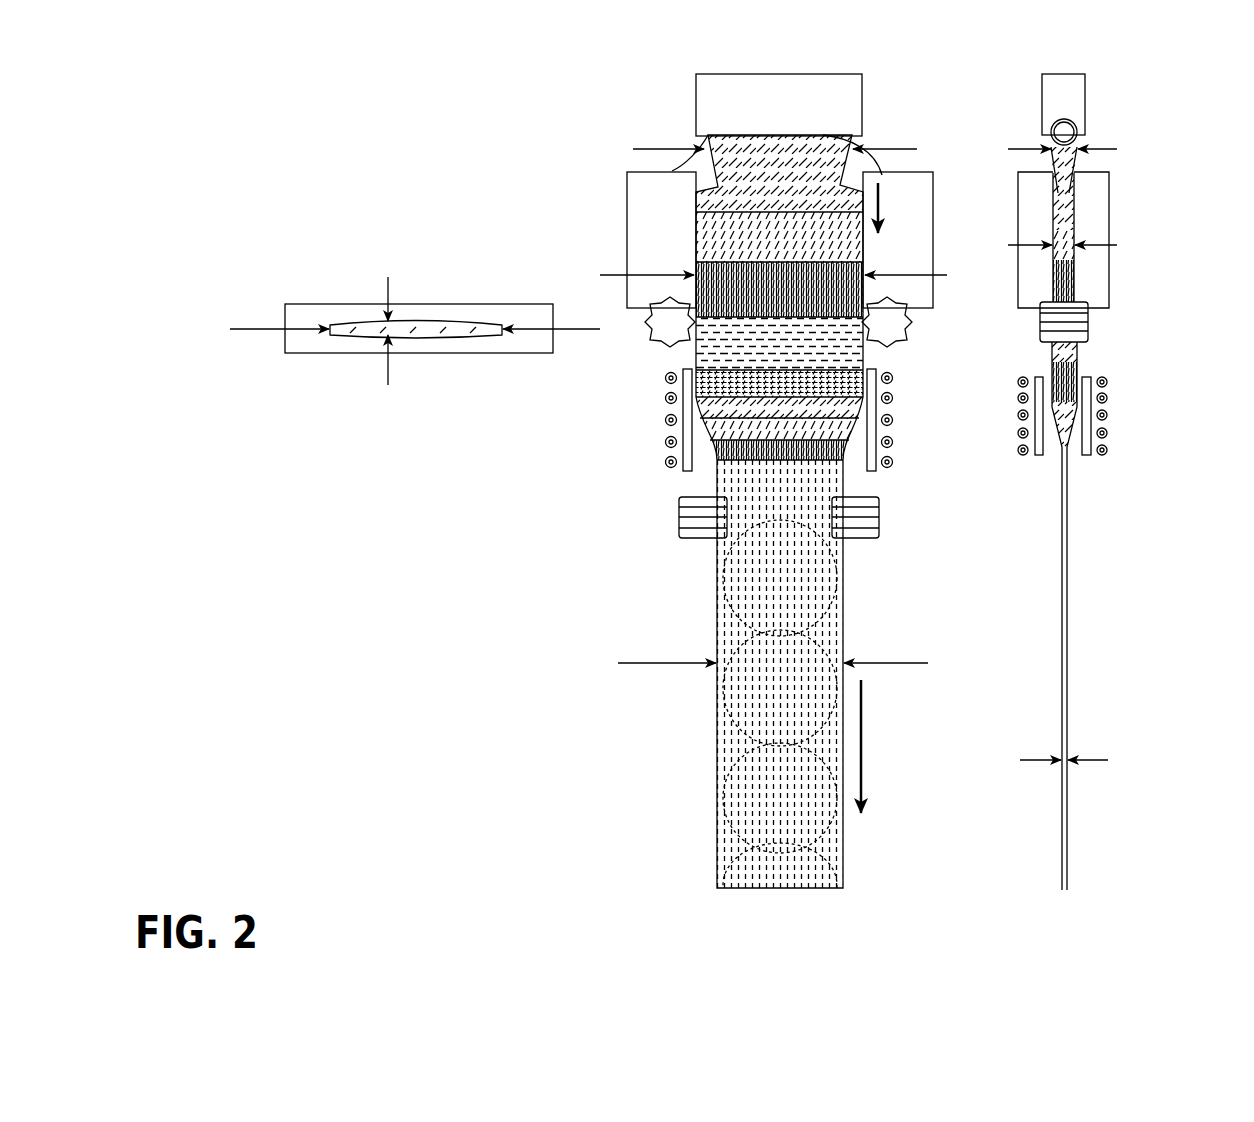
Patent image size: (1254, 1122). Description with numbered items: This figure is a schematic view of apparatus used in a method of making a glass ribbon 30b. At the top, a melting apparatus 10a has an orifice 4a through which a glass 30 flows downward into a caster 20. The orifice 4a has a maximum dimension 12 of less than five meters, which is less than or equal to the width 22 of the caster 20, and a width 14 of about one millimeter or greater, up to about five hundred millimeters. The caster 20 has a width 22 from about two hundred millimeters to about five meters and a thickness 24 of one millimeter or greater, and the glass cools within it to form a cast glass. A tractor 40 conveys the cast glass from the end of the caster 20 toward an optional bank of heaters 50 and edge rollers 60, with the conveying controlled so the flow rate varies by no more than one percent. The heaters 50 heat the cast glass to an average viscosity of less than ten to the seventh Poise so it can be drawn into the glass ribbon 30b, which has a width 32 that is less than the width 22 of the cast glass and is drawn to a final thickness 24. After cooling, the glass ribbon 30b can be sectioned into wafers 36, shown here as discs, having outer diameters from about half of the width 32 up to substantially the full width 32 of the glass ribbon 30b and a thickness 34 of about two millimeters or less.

The melting apparatus 10a is at (845, 95).
The glass 30 is at (773, 147).
The glass ribbon 30b is at (795, 492).
The wafers 36 is at (740, 790).
The caster 20 is at (638, 193).
The maximum dimension 12 is at (653, 148).
The orifice 4a is at (853, 152).
The width 14 is at (1023, 149).
The width 22 is at (940, 274).
The thickness 24 is at (387, 370).
The tractor 40 is at (657, 338).
The heaters 50 is at (667, 442).
The edge rollers 60 is at (847, 525).
The width 32 is at (890, 667).
The thickness 34 is at (1088, 762).